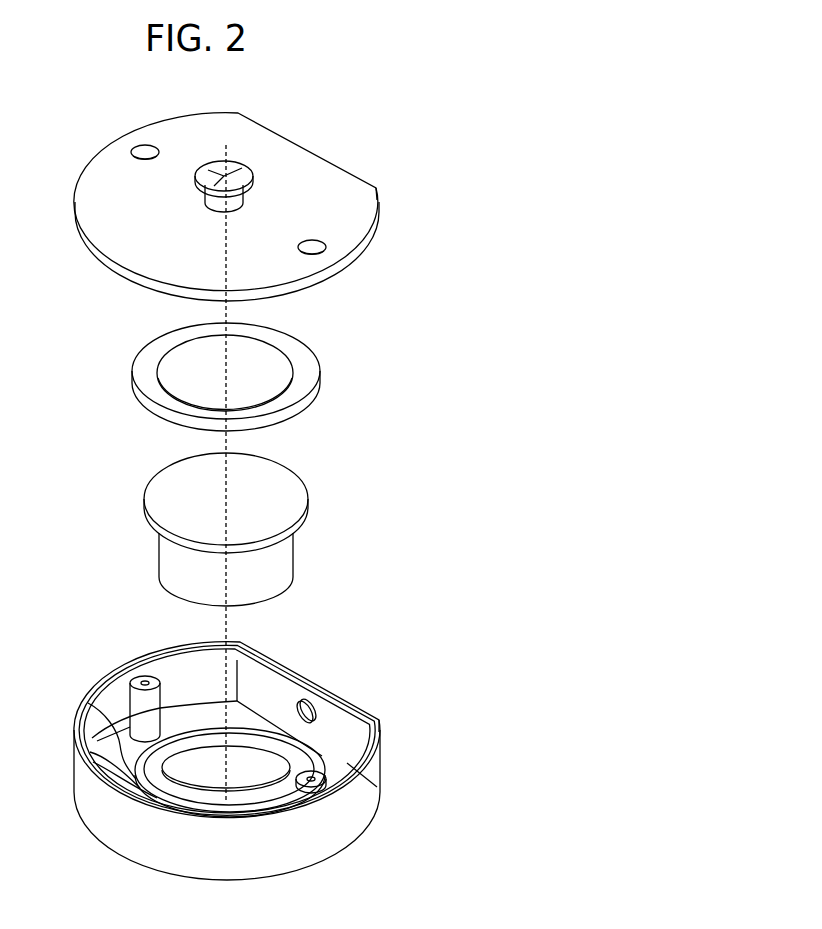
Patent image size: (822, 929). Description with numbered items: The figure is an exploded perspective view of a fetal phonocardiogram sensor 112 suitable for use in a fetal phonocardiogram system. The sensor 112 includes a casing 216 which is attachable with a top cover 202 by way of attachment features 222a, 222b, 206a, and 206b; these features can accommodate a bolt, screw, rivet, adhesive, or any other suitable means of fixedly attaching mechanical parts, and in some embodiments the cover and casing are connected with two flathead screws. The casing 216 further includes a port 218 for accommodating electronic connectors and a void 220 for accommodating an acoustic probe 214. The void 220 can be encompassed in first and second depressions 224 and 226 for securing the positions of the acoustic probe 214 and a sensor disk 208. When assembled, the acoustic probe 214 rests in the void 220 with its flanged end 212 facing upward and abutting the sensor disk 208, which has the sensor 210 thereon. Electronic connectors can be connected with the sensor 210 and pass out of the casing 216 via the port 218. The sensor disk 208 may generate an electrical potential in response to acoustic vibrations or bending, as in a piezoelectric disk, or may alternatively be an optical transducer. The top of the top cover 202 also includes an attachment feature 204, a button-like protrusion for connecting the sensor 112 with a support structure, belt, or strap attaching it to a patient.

The fetal phonocardiogram sensor 112 is at (426, 125).
The top cover 202 is at (379, 191).
The attachment feature 204 is at (247, 170).
The attachment feature 206a is at (326, 243).
The attachment feature 206b is at (140, 148).
The sensor disk 208 is at (320, 371).
The sensor 210 is at (293, 386).
The flanged end 212 is at (302, 500).
The acoustic probe 214 is at (294, 564).
The casing 216 is at (358, 703).
The port 218 is at (308, 707).
The void 220 is at (285, 778).
The attachment feature 222a is at (323, 776).
The attachment feature 222b is at (143, 680).
The first depression 224 is at (90, 754).
The second depression 226 is at (88, 706).